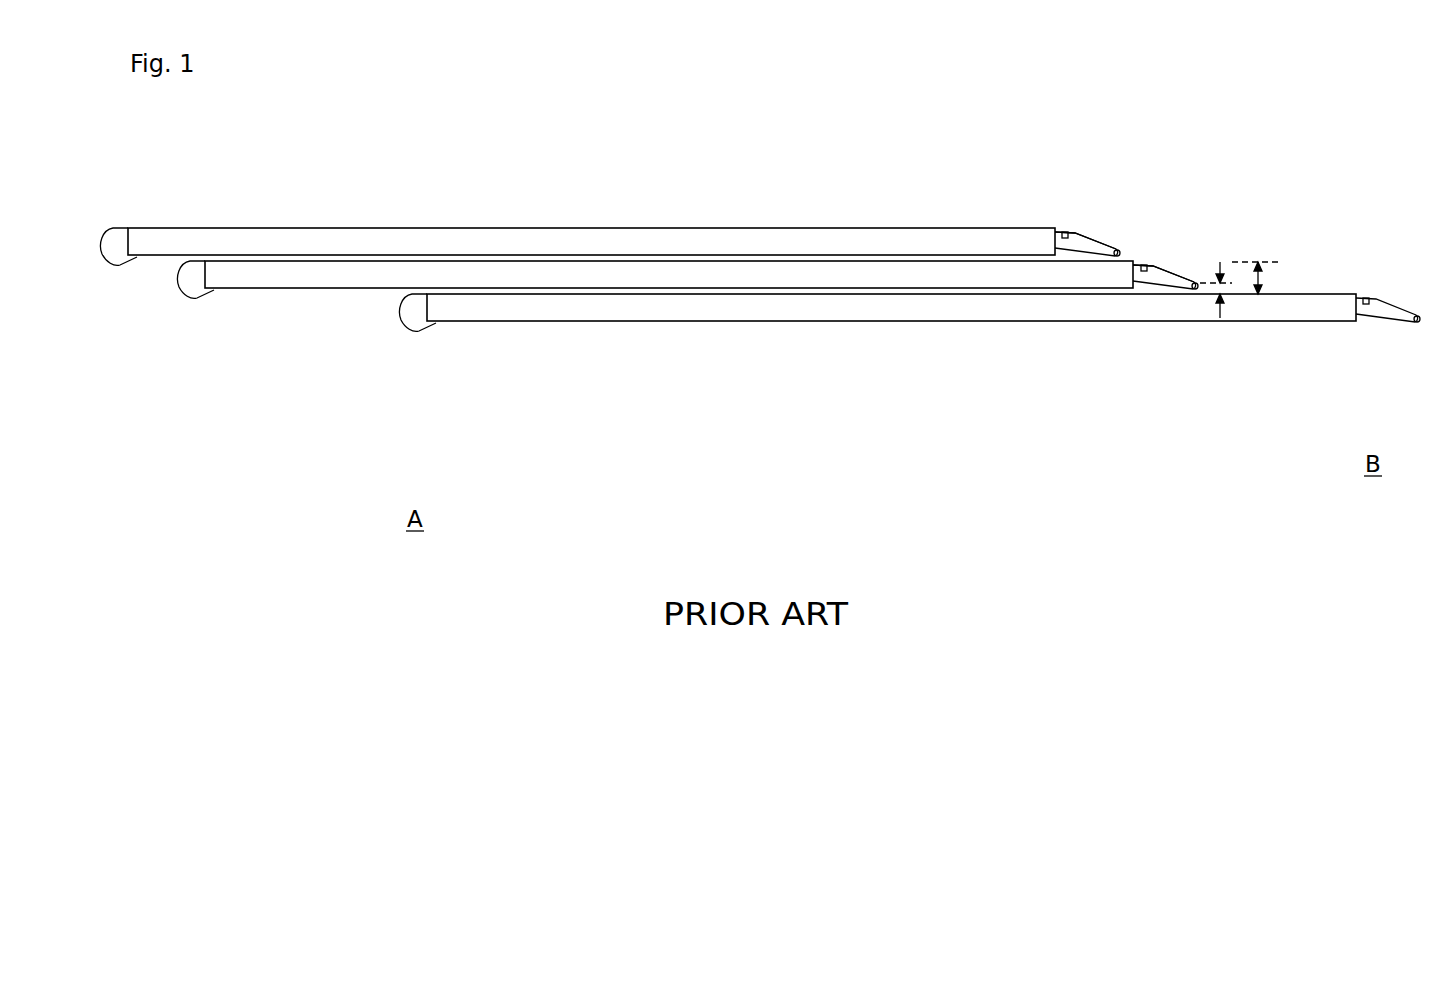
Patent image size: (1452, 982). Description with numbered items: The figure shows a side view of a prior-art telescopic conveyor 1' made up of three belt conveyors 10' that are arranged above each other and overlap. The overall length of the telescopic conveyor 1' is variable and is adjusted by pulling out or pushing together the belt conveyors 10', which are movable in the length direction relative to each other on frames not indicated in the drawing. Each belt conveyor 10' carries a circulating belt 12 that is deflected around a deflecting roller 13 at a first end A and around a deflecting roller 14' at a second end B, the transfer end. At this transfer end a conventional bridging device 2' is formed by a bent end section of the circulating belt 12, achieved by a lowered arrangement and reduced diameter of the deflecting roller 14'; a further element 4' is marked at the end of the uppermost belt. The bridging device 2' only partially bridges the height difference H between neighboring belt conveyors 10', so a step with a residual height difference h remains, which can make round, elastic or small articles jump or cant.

The telescopic conveyor 1' is at (771, 266).
The belt conveyor 10' is at (742, 274).
The circulating belt 12 is at (915, 228).
The deflecting roller 13 is at (116, 248).
The bridging device 2' is at (1124, 213).
The tip 4' is at (1124, 200).
The deflecting roller 14' is at (1317, 307).